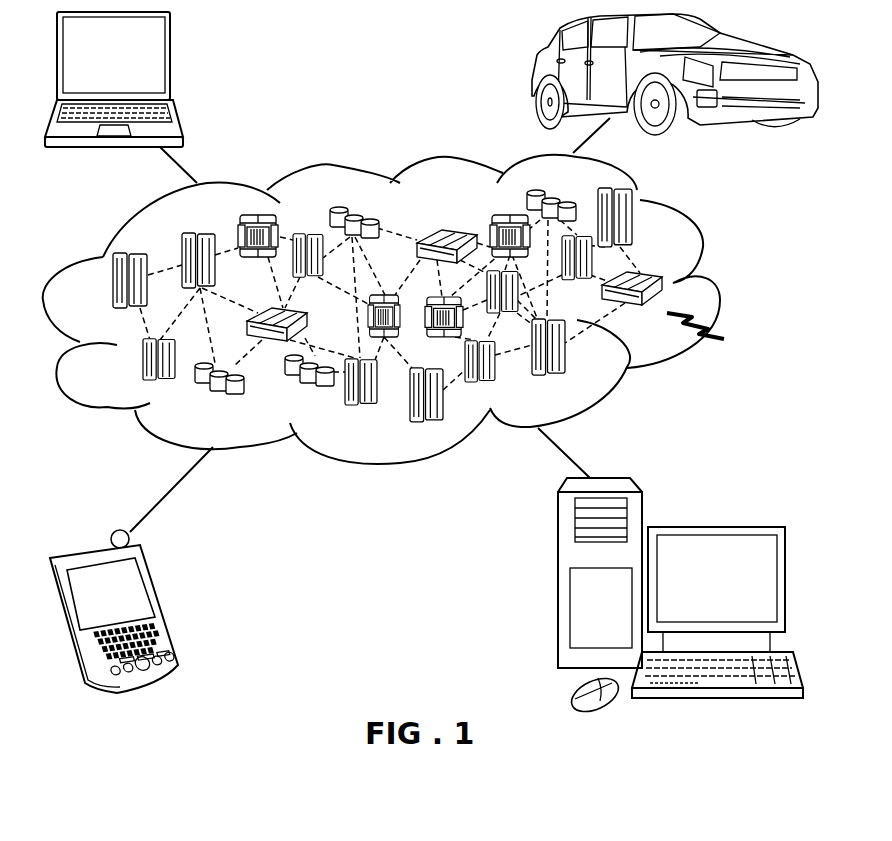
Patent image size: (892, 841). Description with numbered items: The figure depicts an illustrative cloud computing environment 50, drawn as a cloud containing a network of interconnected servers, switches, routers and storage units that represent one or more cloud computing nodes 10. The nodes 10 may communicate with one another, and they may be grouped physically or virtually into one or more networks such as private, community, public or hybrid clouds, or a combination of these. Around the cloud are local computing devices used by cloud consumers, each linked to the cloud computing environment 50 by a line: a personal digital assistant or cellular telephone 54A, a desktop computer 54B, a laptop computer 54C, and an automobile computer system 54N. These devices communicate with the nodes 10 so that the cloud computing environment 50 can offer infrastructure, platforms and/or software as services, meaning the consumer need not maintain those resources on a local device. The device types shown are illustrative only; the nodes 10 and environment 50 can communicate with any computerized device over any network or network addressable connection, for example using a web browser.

The cloud computing nodes 10 is at (708, 329).
The cloud computing environment 50 is at (717, 287).
The personal digital assistant or cellular telephone 54A is at (163, 603).
The desktop computer 54B is at (715, 527).
The laptop computer 54C is at (172, 62).
The automobile computer system 54N is at (534, 72).